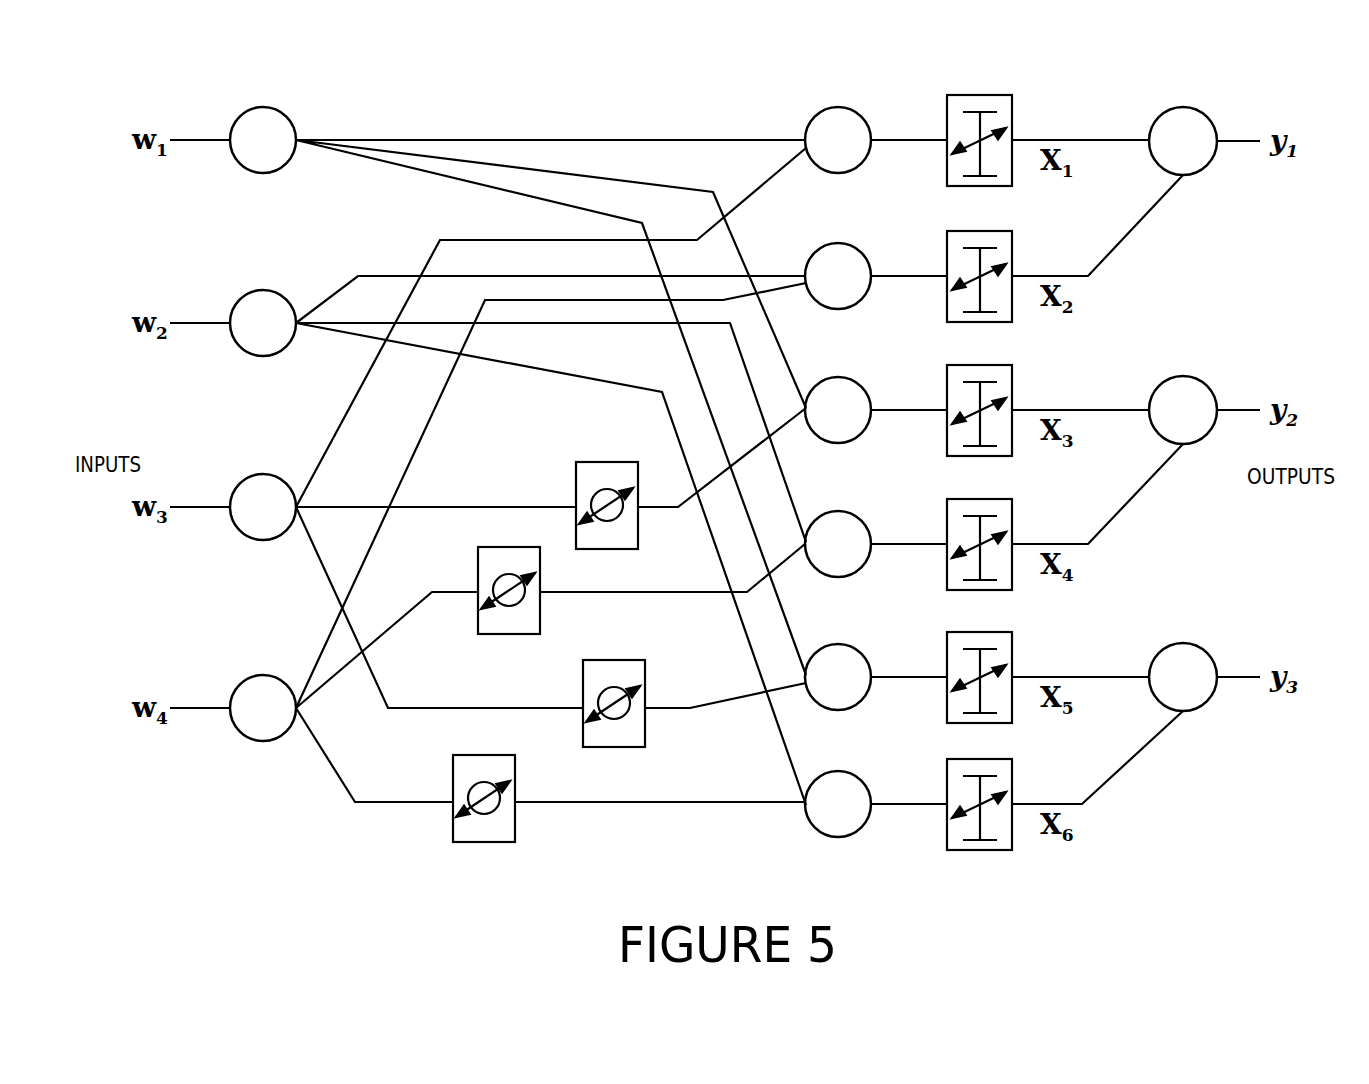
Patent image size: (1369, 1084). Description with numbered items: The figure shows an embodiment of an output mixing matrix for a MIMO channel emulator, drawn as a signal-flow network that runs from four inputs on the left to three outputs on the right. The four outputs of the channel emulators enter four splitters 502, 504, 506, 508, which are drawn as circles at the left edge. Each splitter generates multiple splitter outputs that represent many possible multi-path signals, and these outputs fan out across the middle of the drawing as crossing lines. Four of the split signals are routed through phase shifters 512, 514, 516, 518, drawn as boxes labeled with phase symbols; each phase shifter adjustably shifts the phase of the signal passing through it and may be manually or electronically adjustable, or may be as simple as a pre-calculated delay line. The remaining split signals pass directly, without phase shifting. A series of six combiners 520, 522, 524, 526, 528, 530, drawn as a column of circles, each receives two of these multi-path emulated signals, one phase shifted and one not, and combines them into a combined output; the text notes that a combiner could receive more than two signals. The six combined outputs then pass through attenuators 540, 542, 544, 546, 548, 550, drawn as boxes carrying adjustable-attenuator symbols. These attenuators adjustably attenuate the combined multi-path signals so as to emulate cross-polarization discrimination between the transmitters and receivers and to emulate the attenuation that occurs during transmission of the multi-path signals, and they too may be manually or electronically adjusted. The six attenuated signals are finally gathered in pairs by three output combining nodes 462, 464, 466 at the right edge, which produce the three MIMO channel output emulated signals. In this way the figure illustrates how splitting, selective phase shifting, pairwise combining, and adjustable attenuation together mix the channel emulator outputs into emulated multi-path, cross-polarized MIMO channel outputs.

The splitter 502 is at (263, 115).
The splitter 504 is at (263, 300).
The splitter 506 is at (263, 482).
The splitter 508 is at (263, 683).
The phase shifter 512 is at (607, 466).
The phase shifter 514 is at (483, 565).
The phase shifter 516 is at (614, 670).
The phase shifter 518 is at (458, 775).
The combiner 520 is at (836, 118).
The combiner 522 is at (836, 254).
The combiner 524 is at (836, 388).
The combiner 526 is at (836, 522).
The combiner 528 is at (836, 655).
The combiner 530 is at (836, 782).
The attenuator 540 is at (1005, 105).
The attenuator 542 is at (1005, 241).
The attenuator 544 is at (1005, 375).
The attenuator 546 is at (1005, 509).
The attenuator 548 is at (1002, 640).
The attenuator 550 is at (1002, 767).
The output node y1 462 is at (1183, 118).
The output node y2 464 is at (1183, 388).
The output node y3 466 is at (1183, 655).